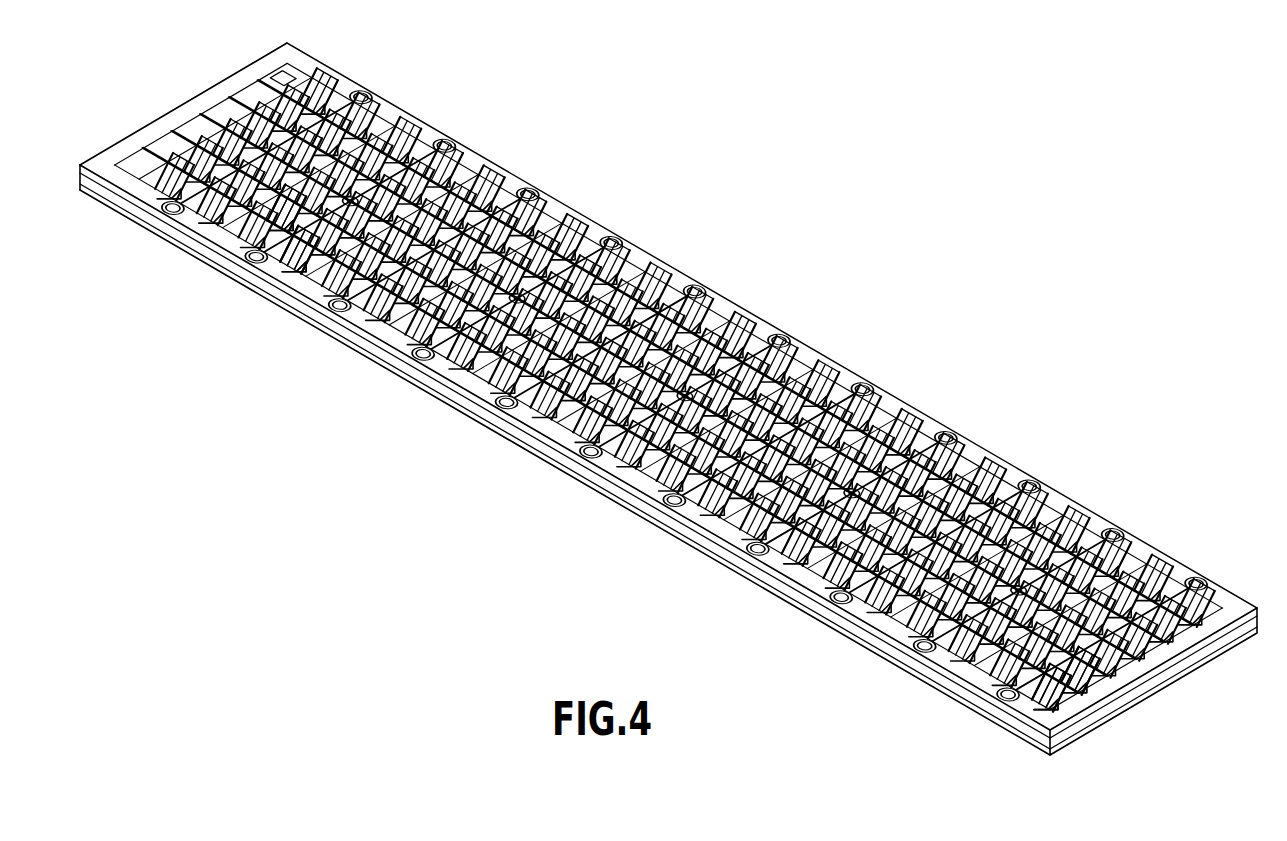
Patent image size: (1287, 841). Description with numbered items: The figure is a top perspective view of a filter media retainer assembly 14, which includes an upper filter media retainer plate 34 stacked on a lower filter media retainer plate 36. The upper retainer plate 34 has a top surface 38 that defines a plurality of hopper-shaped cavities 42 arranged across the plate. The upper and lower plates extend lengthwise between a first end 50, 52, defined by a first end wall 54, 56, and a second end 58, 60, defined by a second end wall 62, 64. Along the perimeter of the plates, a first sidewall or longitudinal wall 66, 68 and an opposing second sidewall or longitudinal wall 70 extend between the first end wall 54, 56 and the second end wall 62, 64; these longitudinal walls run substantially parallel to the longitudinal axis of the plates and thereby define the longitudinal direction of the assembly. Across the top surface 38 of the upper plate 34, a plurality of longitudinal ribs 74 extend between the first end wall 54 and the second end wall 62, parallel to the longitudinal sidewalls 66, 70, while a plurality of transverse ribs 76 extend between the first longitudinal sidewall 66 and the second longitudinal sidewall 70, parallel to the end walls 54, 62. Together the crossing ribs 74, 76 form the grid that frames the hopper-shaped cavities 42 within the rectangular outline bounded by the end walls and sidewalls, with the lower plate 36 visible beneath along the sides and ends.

The media retainer assembly 14 is at (671, 394).
The upper filter media retainer plate 34 is at (1257, 613).
The lower filter media retainer plate 36 is at (965, 705).
The top surface 38 is at (668, 386).
The hopper-shaped cavities 42 is at (684, 396).
The first end 50 is at (1152, 674).
The first end 52 is at (1097, 705).
The first end wall 54 is at (1186, 655).
The first end wall 56 is at (1172, 680).
The second end 58 is at (243, 56).
The second end 60 is at (79, 173).
The second end wall 62 is at (229, 80).
The second end wall 64 is at (84, 180).
The first sidewall or longitudinal wall 66 is at (582, 437).
The first sidewall or longitudinal wall 68 is at (607, 502).
The second sidewall or longitudinal wall 70 is at (763, 330).
The longitudinal ribs 74 is at (685, 390).
The transverse ribs 76 is at (273, 247).